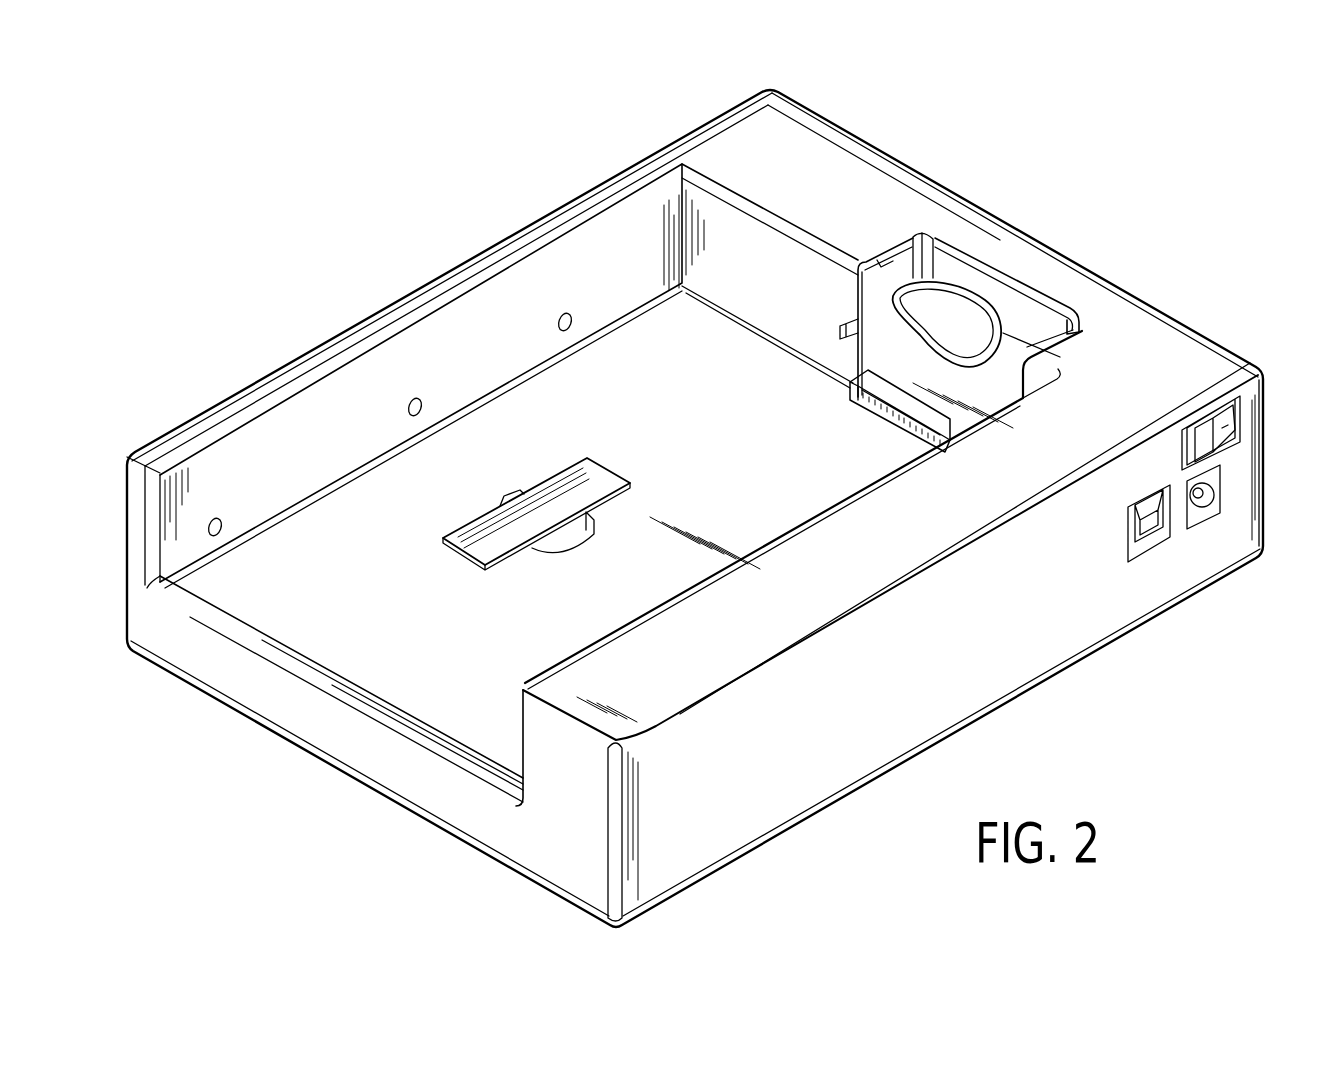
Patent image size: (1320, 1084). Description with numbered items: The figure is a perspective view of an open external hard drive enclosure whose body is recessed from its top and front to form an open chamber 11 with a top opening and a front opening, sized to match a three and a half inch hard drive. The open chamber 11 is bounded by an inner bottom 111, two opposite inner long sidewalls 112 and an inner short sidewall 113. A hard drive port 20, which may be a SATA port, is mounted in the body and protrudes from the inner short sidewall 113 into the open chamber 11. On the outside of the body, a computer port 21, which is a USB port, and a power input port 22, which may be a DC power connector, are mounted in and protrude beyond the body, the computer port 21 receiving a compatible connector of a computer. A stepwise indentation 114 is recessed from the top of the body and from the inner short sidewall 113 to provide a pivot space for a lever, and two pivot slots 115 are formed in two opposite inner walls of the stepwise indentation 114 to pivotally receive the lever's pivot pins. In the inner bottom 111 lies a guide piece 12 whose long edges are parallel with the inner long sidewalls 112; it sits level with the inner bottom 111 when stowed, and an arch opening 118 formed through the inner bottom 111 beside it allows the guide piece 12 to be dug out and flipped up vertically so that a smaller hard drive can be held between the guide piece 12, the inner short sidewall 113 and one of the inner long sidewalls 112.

The open chamber 11 is at (789, 533).
The inner bottom 111 is at (443, 712).
The inner long sidewalls 112 is at (286, 438).
The inner short sidewall 113 is at (779, 244).
The stepwise indentation 114 is at (1030, 298).
The pivot slots 115 is at (846, 330).
The arch opening 118 is at (592, 520).
The guide piece 12 is at (486, 548).
The hard drive port 20 is at (908, 420).
The computer port 21 is at (1150, 537).
The power input port 22 is at (1220, 493).